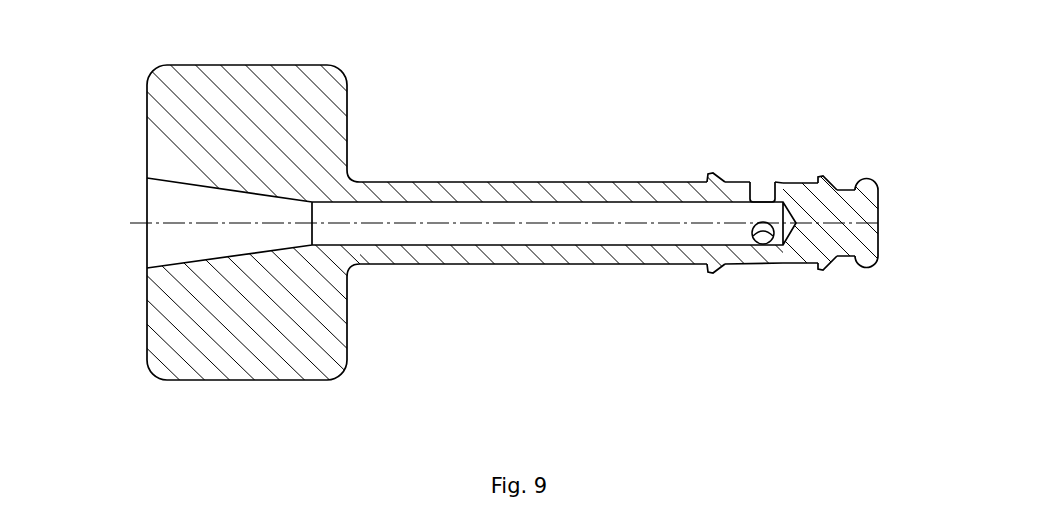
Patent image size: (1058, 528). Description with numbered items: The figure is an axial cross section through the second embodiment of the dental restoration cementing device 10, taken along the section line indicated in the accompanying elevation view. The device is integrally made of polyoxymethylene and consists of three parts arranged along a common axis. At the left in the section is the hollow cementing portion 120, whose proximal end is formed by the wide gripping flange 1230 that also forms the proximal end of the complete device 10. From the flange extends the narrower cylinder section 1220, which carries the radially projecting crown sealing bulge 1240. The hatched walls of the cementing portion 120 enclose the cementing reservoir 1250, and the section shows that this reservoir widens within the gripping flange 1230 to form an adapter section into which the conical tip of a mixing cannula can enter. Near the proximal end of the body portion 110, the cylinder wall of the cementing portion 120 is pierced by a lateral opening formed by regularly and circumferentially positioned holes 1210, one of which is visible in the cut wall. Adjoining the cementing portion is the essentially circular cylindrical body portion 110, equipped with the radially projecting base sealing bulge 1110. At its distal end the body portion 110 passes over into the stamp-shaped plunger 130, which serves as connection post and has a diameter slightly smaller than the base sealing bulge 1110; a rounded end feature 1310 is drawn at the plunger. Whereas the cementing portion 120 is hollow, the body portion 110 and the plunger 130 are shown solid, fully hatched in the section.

The dental restoration cementing device 10 is at (137, 121).
The body portion 110 is at (777, 283).
The cementing portion 120 is at (147, 373).
The plunger 130 is at (852, 283).
The base sealing bulge 1110 is at (822, 177).
The holes 1210 is at (764, 200).
The cylinder section 1220 is at (408, 188).
The gripping flange 1230 is at (193, 88).
The crown sealing bulge 1240 is at (710, 174).
The cementing reservoir 1250 is at (543, 212).
The rounded end 1310 is at (871, 178).